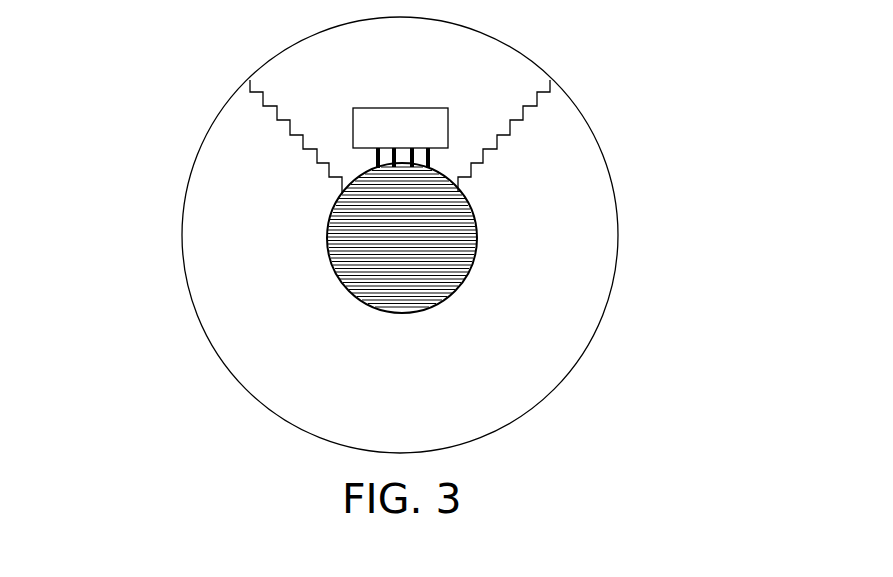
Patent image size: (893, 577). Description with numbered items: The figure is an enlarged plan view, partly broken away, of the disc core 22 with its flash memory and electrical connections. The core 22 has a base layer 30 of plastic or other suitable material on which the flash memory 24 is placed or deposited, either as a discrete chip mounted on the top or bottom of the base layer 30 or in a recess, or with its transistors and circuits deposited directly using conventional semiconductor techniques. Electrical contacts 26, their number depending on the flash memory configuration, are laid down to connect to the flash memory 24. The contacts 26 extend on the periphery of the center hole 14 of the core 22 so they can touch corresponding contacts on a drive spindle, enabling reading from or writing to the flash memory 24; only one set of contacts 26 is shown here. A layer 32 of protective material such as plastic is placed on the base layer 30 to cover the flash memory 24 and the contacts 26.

The core 22 is at (84, 88).
The center hole 14 is at (457, 238).
The flash memory 24 is at (418, 122).
The electrical contacts 26 is at (433, 158).
The base layer 30 is at (475, 52).
The layer of protective material 32 is at (599, 247).